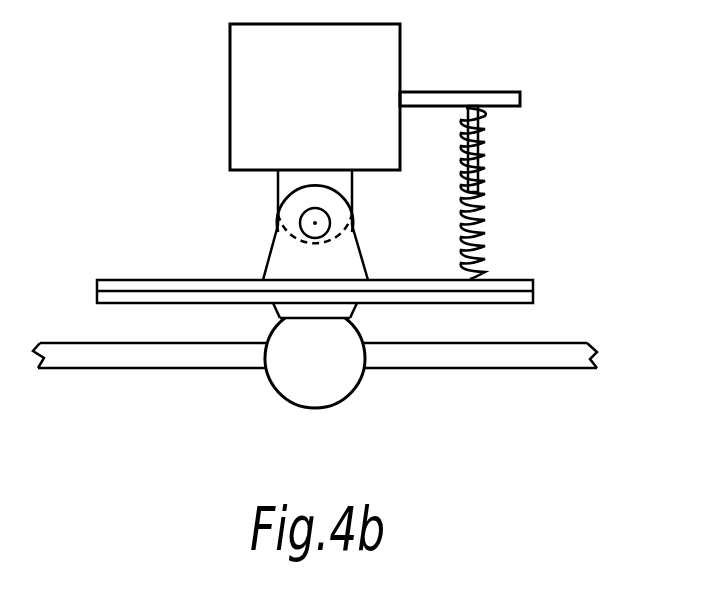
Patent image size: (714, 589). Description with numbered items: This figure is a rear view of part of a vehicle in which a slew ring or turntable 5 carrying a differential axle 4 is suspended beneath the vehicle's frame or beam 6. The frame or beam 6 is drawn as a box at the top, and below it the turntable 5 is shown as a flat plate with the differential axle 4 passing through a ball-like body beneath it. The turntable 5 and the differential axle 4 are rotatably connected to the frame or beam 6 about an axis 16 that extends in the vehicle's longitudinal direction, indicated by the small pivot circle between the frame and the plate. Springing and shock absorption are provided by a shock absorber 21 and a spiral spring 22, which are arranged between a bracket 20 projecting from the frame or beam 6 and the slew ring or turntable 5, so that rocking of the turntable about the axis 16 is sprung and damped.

The differential axle 4 is at (295, 378).
The slew ring or turntable 5 is at (523, 288).
The frame or beam 6 is at (254, 85).
The axis 16 is at (313, 223).
The bracket 20 is at (501, 97).
The shock absorber 21 is at (474, 158).
The spiral spring 22 is at (463, 229).